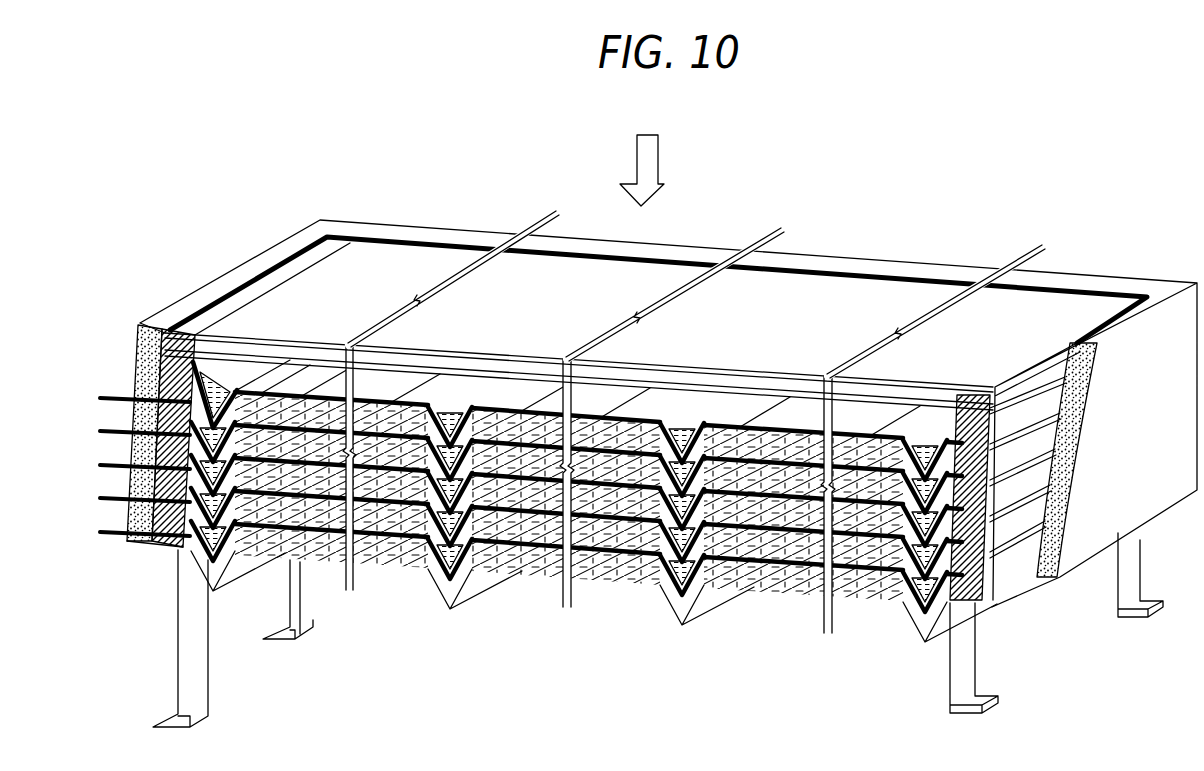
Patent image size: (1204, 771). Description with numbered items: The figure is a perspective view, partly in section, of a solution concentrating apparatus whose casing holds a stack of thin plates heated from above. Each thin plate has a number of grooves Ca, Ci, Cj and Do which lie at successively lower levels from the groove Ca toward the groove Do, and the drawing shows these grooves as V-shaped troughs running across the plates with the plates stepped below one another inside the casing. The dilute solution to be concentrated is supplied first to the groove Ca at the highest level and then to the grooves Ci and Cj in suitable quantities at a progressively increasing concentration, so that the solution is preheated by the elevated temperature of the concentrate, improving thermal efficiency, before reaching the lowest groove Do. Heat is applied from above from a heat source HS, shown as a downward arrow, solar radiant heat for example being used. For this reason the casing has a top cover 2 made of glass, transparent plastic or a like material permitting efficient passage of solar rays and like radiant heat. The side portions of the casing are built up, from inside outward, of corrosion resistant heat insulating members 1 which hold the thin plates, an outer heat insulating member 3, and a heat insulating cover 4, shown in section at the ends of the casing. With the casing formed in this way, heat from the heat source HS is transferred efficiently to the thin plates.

The corrosion resistant heat insulating member 1 is at (574, 413).
The top cover 2 is at (579, 297).
The outer heat insulating member 3 is at (173, 385).
The heat insulating cover 4 is at (117, 382).
The groove Ca is at (250, 384).
The groove Ci is at (475, 392).
The groove Cj is at (707, 400).
The groove Do is at (950, 416).
The heat source HS is at (644, 153).